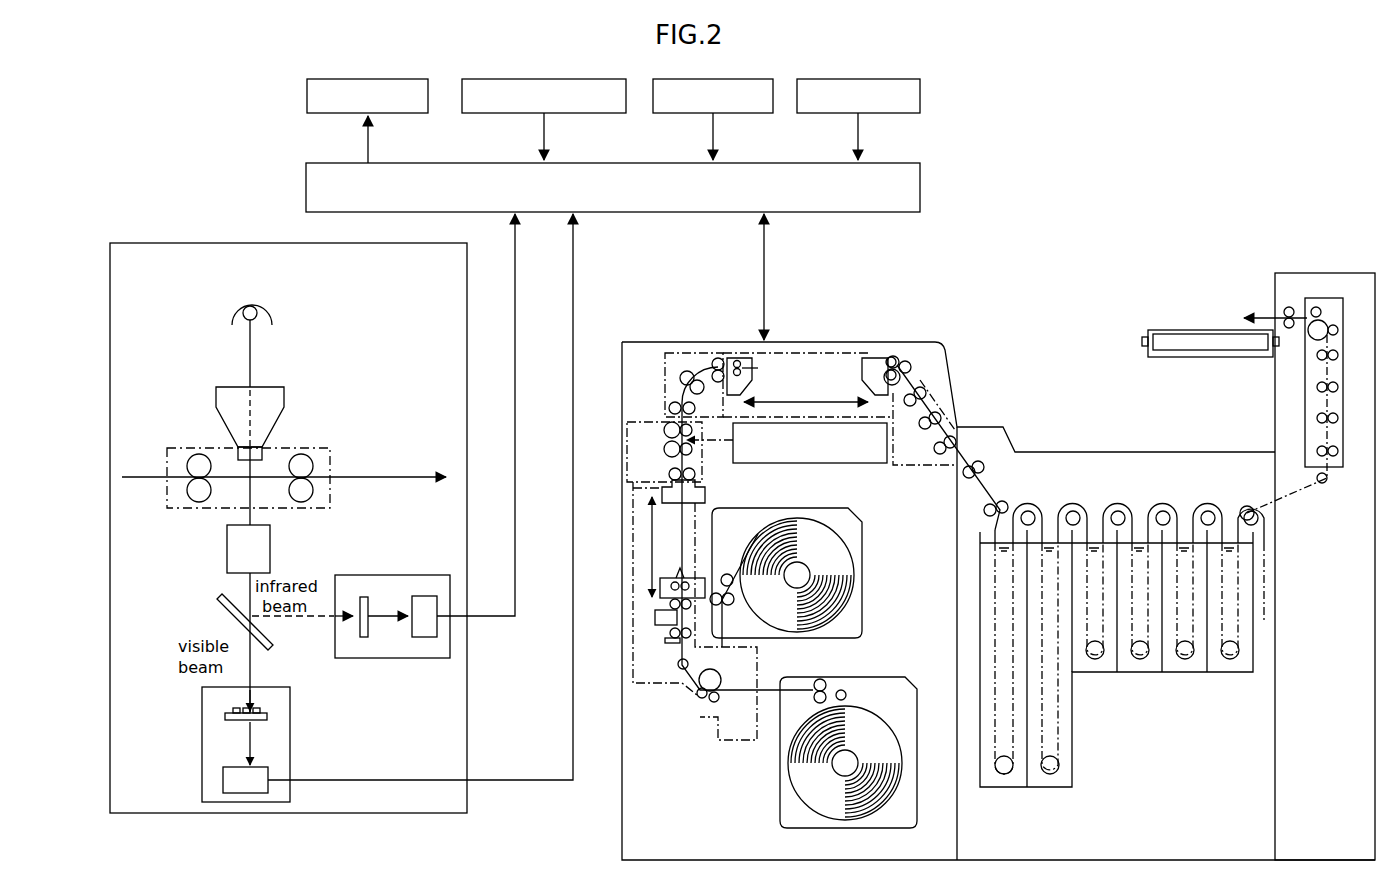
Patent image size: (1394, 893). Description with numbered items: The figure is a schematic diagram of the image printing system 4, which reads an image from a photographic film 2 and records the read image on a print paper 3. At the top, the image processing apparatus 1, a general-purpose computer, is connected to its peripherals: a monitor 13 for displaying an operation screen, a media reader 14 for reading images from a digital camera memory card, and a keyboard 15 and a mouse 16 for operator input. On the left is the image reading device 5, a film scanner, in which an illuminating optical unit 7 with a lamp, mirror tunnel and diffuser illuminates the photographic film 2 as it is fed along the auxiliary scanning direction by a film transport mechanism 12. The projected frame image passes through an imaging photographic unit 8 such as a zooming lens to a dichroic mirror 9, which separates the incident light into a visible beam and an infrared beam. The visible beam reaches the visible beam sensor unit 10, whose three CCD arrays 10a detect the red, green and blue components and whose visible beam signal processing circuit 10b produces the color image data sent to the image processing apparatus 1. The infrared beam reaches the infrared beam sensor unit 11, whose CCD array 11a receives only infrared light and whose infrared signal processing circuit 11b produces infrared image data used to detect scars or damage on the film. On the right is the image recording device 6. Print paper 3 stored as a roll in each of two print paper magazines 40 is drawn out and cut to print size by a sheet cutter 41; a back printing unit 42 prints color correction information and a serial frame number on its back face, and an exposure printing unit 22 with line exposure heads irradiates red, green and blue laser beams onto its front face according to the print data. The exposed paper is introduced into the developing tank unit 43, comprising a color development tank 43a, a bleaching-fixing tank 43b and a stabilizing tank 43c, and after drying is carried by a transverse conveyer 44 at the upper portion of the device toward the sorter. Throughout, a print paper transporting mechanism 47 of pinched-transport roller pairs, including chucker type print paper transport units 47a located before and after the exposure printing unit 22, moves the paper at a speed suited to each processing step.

The image processing apparatus 1 is at (306, 178).
The photographic film 2 is at (365, 472).
The print paper 3 is at (700, 372).
The image printing system 4 is at (1156, 130).
The image reading device 5 is at (213, 243).
The image recording device 6 is at (984, 286).
The illuminating optical unit 7 is at (272, 318).
The imaging photographic unit 8 is at (227, 551).
The dichroic mirror 9 is at (228, 612).
The visible beam sensor unit 10 is at (292, 729).
The CCD arrays 10a is at (232, 712).
The visible beam signal processing circuit 10b is at (223, 772).
The infrared beam sensor unit 11 is at (378, 575).
The CCD array 11a is at (359, 632).
The infrared signal processing circuit 11b is at (430, 637).
The film transport mechanism 12 is at (198, 447).
The monitor 13 is at (307, 97).
The media reader 14 is at (462, 97).
The keyboard 15 is at (745, 79).
The mouse 16 is at (920, 97).
The exposure printing unit 22 is at (832, 455).
The print paper magazines 40 is at (862, 612).
The sheet cutter 41 is at (665, 641).
The back printing unit 42 is at (656, 617).
The developing tank unit 43 is at (1176, 720).
The color development tank 43a is at (1008, 781).
The bleaching-fixing tank 43b is at (1066, 781).
The stabilizing tank 43c is at (1231, 665).
The transverse conveyer 44 is at (1151, 328).
The print paper transporting mechanism 47 is at (684, 370).
The chucker type print paper transport units 47a is at (826, 350).